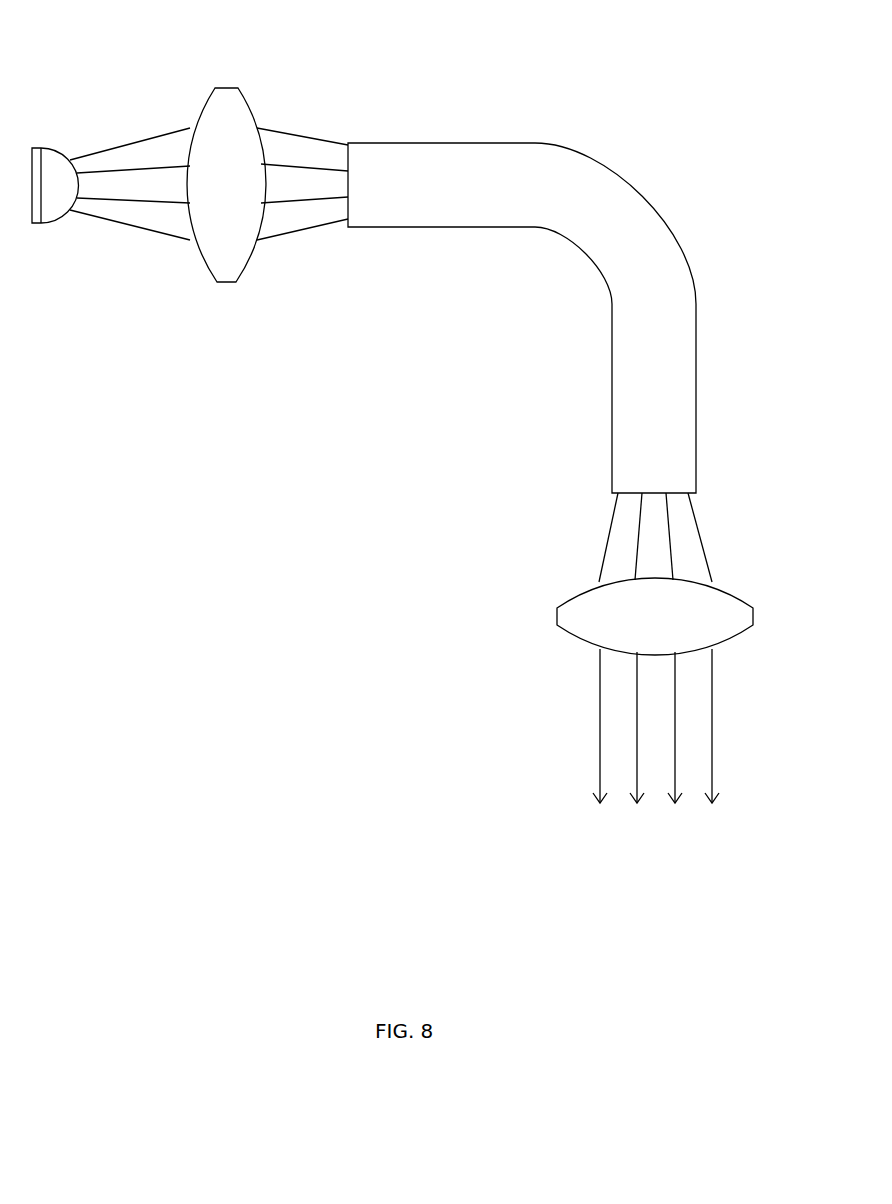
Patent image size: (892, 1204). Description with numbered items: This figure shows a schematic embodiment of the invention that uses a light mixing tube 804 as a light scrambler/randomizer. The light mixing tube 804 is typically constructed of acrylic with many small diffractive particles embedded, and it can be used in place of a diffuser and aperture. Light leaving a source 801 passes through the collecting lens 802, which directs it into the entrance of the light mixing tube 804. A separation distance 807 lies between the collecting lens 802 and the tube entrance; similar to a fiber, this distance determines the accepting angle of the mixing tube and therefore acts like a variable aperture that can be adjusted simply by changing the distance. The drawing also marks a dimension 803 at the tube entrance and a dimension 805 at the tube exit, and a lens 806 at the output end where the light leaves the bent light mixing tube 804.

The light source (LED) 801 is at (53, 208).
The collecting lens 802 is at (192, 57).
The width of light guide input 803 is at (377, 107).
The light mixing tube 804 is at (532, 318).
The height of light guide output 805 is at (739, 412).
The output lens 806 is at (787, 585).
The separation distance 807 is at (350, 242).